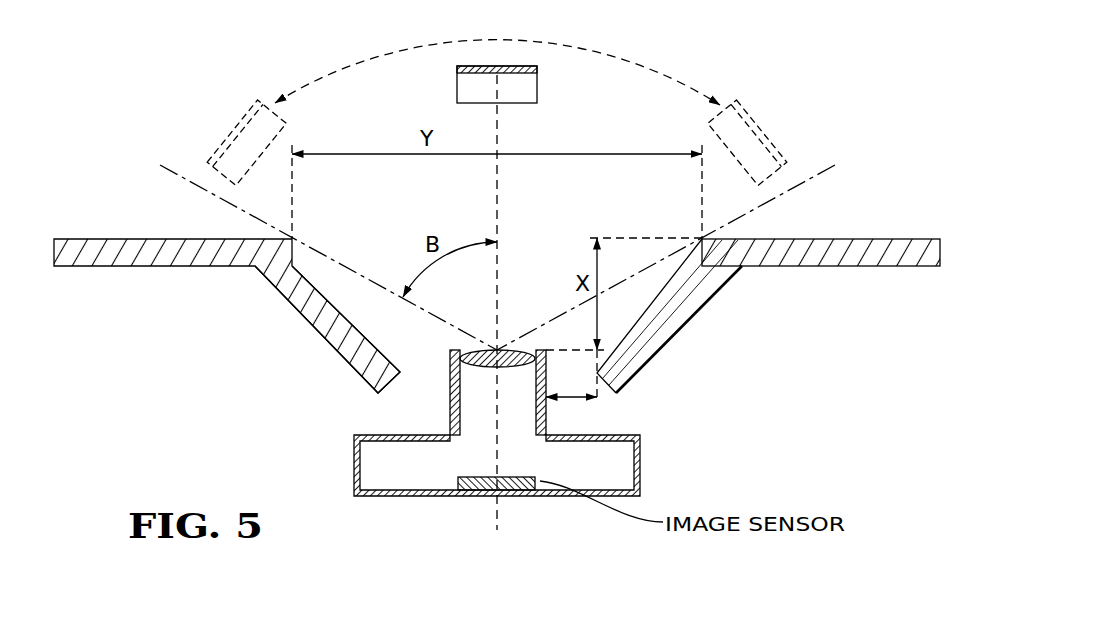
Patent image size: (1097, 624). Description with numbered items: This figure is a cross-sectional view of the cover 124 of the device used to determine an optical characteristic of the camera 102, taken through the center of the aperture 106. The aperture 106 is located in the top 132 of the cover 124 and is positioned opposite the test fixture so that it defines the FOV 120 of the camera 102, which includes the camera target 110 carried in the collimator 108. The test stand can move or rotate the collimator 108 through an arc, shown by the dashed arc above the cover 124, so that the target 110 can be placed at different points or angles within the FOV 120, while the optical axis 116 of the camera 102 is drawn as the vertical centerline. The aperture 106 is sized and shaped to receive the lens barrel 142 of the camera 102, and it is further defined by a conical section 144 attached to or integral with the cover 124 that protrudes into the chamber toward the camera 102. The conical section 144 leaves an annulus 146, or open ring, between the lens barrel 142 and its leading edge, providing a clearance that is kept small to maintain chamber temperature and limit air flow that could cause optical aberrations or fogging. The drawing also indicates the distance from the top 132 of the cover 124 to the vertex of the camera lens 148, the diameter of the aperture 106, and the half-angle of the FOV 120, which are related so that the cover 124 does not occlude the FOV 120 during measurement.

The camera 102 is at (354, 456).
The aperture 106 is at (535, 292).
The collimator 108 is at (457, 83).
The target 110 is at (523, 66).
The optical axis 116 is at (497, 513).
The FOV 120 is at (168, 168).
The cover 124 is at (158, 266).
The top 132 is at (877, 239).
The lens barrel 142 is at (450, 393).
The conical section 144 is at (683, 332).
The annulus 146 is at (570, 400).
The camera lens 148 is at (452, 352).